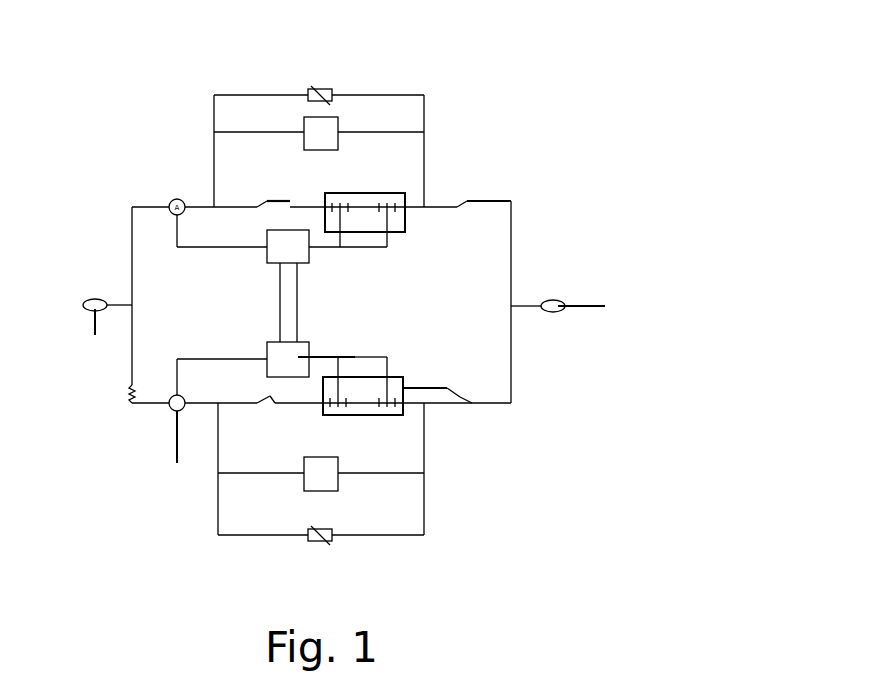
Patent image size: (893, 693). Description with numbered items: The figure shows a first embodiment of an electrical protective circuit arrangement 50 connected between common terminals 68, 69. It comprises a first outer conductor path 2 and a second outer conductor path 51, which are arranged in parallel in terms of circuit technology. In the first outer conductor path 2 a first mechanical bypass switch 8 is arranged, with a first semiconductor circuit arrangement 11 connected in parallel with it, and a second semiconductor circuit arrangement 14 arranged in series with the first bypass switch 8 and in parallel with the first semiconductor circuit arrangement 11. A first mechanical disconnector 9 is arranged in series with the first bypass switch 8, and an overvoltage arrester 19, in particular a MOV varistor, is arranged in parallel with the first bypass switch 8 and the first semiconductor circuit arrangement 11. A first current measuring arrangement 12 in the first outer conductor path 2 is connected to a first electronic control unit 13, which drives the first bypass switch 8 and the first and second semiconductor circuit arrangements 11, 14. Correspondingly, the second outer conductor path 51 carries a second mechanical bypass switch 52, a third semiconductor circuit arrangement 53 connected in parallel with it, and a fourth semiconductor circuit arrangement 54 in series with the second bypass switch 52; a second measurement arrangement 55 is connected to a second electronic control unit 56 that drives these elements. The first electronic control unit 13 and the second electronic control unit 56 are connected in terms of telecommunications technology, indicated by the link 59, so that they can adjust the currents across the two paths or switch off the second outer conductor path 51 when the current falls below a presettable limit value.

The electrical protective circuit arrangement 50 is at (493, 57).
The first outer conductor path 2 is at (104, 289).
The first current measuring arrangement 12 is at (266, 151).
The first semiconductor circuit arrangement 11 is at (330, 131).
The overvoltage arrester 19 is at (385, 576).
The first mechanical bypass switch 8 is at (283, 182).
The second semiconductor circuit arrangement 14 is at (411, 188).
The first mechanical disconnector 9 is at (518, 455).
The first electronic control unit 13 is at (305, 258).
The controller communication line 59 is at (354, 302).
The second electronic control unit 56 is at (297, 313).
The fourth semiconductor circuit arrangement 54 is at (480, 302).
The second outer conductor path 51 is at (221, 414).
The second measurement arrangement 55 is at (154, 450).
The second mechanical bypass switch 52 is at (262, 398).
The third semiconductor circuit arrangement 53 is at (325, 482).
The common terminal 68 is at (76, 325).
The common terminal 69 is at (574, 273).